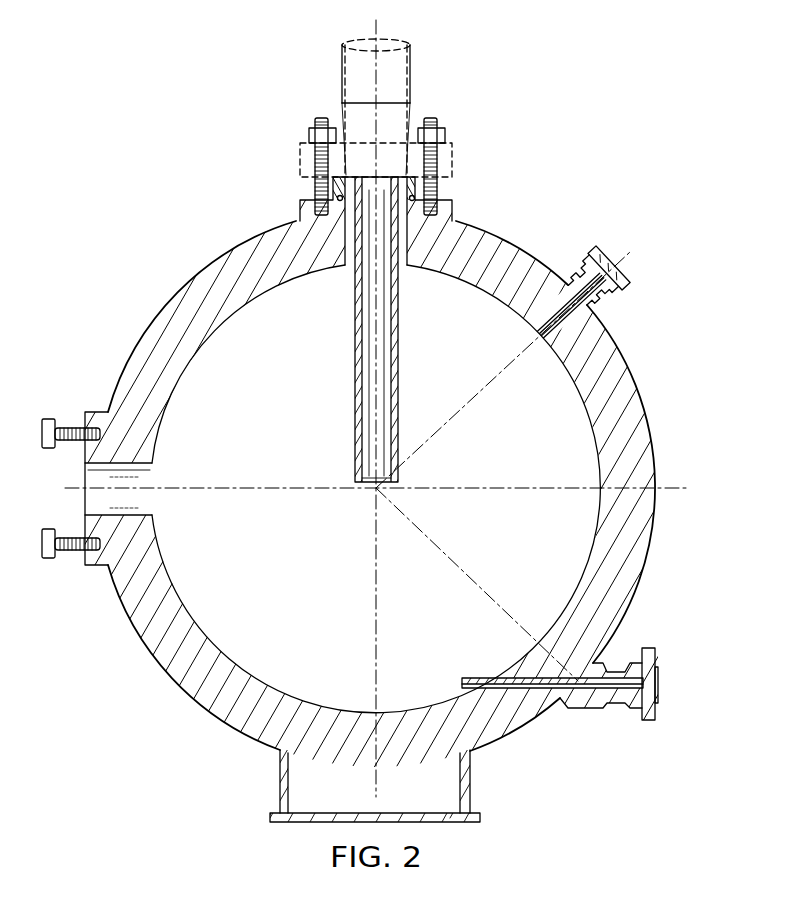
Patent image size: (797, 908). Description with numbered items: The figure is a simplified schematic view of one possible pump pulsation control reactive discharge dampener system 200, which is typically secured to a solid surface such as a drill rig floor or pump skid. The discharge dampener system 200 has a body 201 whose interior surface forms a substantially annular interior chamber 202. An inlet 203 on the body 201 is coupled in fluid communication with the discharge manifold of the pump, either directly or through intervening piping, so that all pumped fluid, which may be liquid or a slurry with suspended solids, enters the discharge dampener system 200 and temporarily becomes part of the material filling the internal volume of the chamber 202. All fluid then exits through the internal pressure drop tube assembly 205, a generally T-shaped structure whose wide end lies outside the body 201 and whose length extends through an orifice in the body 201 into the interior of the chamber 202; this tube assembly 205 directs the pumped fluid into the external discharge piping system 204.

The discharge dampener system 200 is at (136, 154).
The body 201 is at (142, 335).
The interior chamber 202 is at (319, 623).
The inlet 203 is at (97, 477).
The external discharge piping system 204 is at (333, 56).
The internal pressure drop tube assembly 205 is at (354, 350).